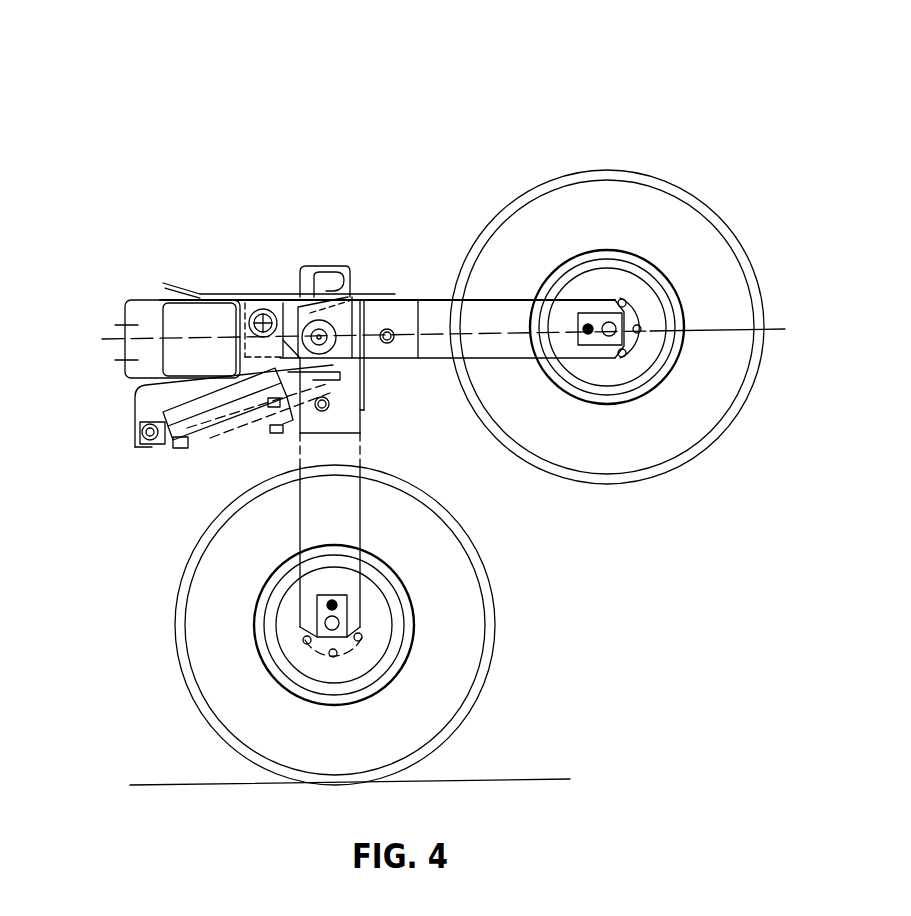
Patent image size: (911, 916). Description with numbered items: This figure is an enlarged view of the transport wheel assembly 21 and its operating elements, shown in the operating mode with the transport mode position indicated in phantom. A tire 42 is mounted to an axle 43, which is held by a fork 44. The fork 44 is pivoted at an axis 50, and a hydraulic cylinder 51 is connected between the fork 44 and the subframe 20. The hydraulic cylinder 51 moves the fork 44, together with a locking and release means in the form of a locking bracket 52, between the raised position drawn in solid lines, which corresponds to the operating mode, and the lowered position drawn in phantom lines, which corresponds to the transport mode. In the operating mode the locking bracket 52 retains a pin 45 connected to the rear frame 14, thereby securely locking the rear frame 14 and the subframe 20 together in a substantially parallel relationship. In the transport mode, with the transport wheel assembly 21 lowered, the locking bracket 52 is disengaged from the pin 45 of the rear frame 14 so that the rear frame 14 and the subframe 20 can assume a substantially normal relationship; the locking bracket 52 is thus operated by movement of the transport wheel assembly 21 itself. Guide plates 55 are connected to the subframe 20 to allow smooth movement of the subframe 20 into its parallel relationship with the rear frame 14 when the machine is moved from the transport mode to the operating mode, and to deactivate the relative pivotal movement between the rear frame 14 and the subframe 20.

The rear frame 14 is at (125, 300).
The subframe 20 is at (140, 445).
The transport wheel assembly 21 is at (350, 122).
The tire 42 is at (710, 210).
The axle 43 is at (620, 340).
The fork 44 is at (503, 357).
The pin 45 is at (265, 309).
The axis 50 is at (322, 334).
The hydraulic cylinder 51 is at (203, 435).
The locking bracket 52 is at (245, 300).
The guide plates 55 is at (315, 270).